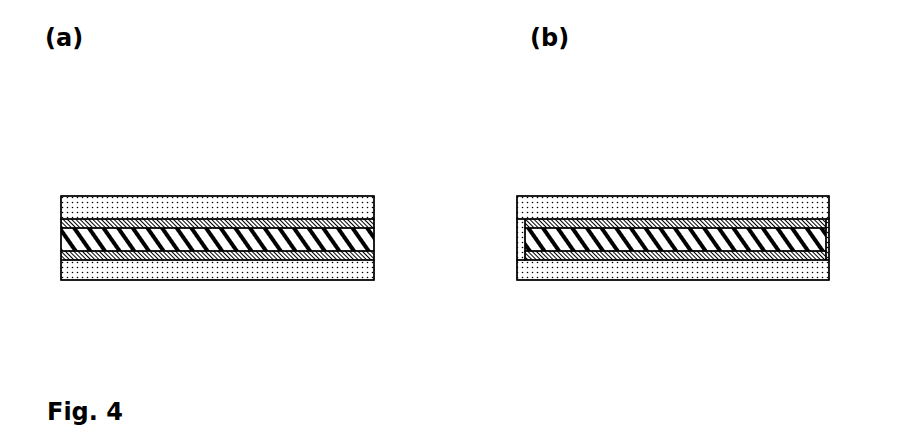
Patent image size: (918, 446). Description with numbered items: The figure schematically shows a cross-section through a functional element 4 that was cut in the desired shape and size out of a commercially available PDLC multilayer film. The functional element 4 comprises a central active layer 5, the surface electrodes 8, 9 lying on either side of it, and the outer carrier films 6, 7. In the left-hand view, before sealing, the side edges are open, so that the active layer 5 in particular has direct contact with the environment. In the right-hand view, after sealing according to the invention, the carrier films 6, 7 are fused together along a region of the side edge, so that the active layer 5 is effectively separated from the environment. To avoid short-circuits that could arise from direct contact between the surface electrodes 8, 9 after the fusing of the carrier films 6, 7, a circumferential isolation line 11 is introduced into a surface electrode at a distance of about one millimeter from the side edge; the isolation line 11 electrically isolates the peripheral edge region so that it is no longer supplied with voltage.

The functional element 4 is at (245, 93).
The active layer 5 is at (366, 241).
The carrier film 6 is at (182, 196).
The carrier film 7 is at (218, 270).
The surface electrode 8 is at (706, 222).
The surface electrode 9 is at (720, 258).
The isolation line 11 is at (540, 224).